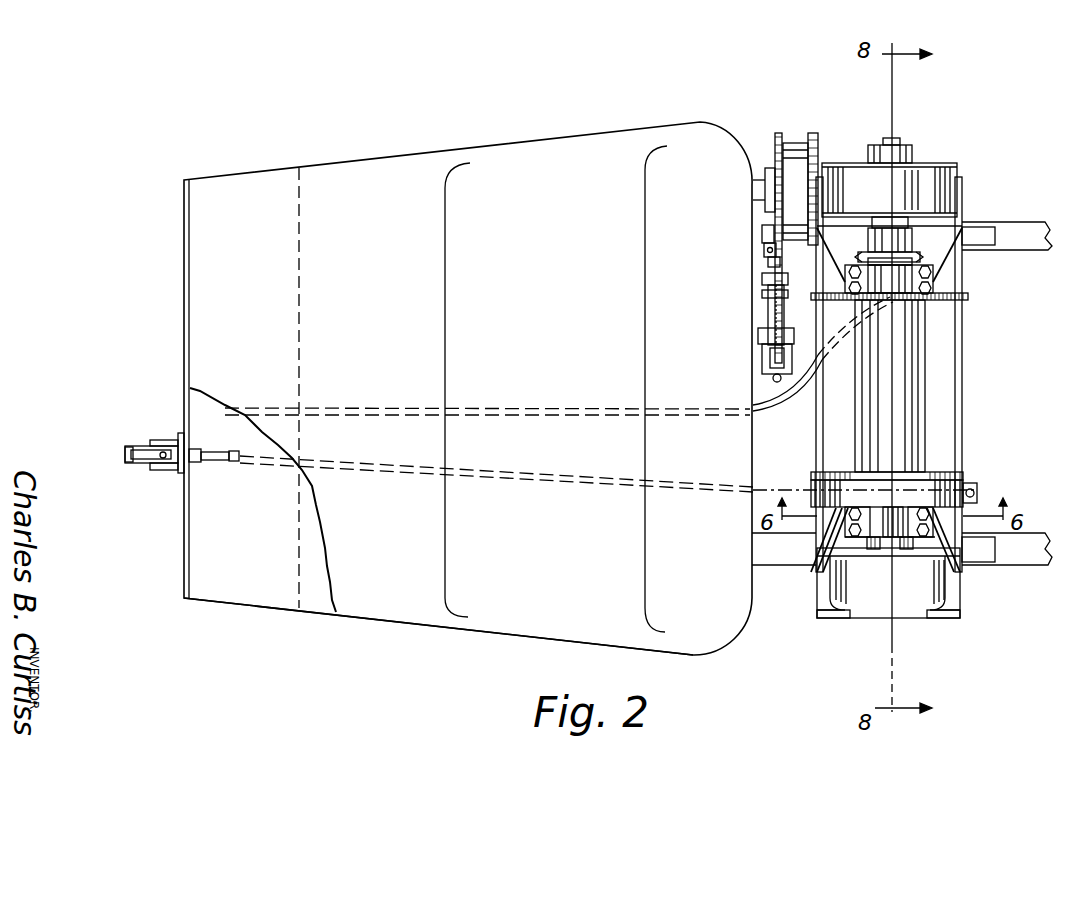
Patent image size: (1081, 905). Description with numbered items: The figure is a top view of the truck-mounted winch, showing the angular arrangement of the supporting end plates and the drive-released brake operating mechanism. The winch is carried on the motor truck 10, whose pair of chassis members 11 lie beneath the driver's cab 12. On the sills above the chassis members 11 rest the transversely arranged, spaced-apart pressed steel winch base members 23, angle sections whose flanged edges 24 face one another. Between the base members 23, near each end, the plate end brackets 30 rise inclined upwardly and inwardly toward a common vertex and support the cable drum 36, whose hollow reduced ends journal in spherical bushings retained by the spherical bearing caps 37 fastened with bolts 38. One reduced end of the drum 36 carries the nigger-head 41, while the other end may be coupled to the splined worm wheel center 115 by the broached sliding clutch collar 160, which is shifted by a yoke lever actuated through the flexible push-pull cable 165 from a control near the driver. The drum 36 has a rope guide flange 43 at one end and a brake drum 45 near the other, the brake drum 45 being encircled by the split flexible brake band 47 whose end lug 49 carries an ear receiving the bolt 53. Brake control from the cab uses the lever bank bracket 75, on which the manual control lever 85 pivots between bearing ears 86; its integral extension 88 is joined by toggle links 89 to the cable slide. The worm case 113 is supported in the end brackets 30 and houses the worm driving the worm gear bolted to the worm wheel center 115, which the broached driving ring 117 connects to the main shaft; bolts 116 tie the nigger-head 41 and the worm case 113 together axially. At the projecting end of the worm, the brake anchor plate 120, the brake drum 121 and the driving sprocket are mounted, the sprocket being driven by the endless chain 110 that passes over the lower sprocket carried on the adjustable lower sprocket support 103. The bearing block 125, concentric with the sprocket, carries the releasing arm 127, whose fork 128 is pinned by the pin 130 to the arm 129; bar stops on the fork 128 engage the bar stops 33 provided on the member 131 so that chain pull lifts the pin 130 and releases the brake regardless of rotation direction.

The motor truck 10 is at (628, 132).
The driver's cab 12 is at (410, 628).
The chassis members 11 is at (1050, 565).
The winch base members 23 is at (837, 618).
The flanged edges 24 is at (818, 597).
The plate end brackets 30 is at (843, 533).
The brace 33 is at (830, 525).
The cable drum 36 is at (915, 382).
The spherical bearing caps 37 is at (897, 523).
The bolts 38 is at (935, 270).
The nigger-head 41 is at (877, 610).
The rope guide flange 43 is at (950, 300).
The brake drum 45 is at (940, 472).
The brake band 47 is at (908, 482).
The brake band lug 49 is at (985, 498).
The bolt 53 is at (978, 490).
The lever bank bracket 75 is at (160, 470).
The manual control lever 85 is at (208, 462).
The bearing ears 86 is at (205, 452).
The extension 88 is at (123, 455).
The toggle links 89 is at (143, 447).
The lower sprocket support 103 is at (760, 348).
The endless chain 110 is at (778, 140).
The worm case 113 is at (920, 175).
The worm wheel center 115 is at (912, 218).
The bolts 116 is at (893, 136).
The driving ring 117 is at (912, 148).
The brake anchor plate 120 is at (817, 138).
The brake drum 121 is at (796, 143).
The bearing block 125 is at (753, 182).
The releasing arm 127 is at (762, 222).
The fork 128 is at (765, 243).
The arm 129 is at (772, 282).
The pin 130 is at (768, 260).
The member 131 is at (762, 297).
The sliding clutch collar 160 is at (906, 240).
The push-pull cable 165 is at (790, 404).